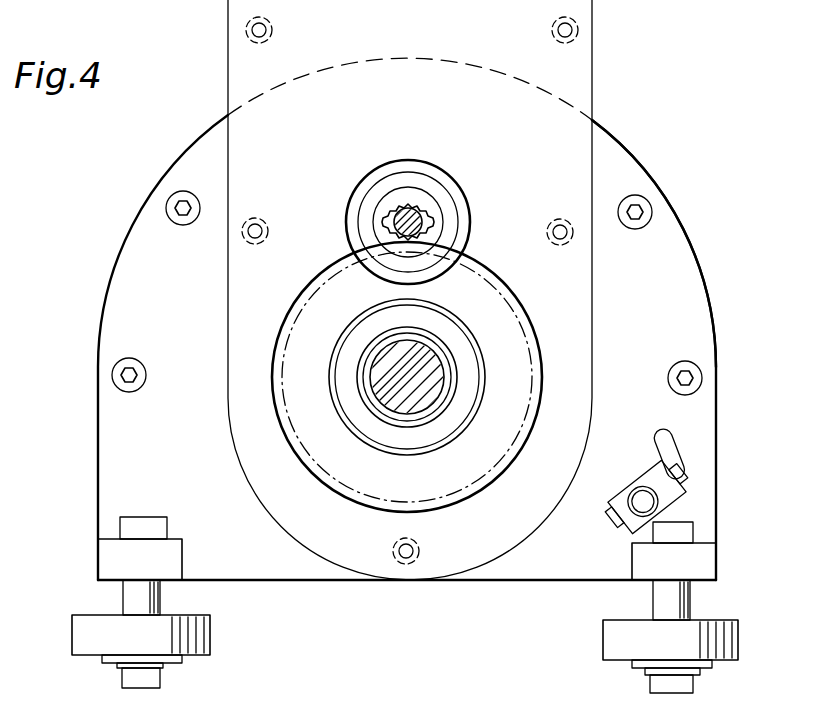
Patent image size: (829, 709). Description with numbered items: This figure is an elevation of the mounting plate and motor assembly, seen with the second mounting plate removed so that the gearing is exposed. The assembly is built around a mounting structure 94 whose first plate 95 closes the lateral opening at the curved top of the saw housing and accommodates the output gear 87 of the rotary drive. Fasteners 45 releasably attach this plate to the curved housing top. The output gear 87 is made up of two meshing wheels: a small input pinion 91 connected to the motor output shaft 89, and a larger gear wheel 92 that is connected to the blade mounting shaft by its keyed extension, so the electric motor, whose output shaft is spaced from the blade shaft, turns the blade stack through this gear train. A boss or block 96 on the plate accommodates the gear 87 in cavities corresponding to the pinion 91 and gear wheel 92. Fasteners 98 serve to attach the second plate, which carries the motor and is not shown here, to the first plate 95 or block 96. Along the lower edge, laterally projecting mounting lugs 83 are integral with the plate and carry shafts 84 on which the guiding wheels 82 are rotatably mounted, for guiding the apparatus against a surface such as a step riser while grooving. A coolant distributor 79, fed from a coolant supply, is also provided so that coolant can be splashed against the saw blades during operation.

The fasteners 45 is at (172, 198).
The coolant distributor 79 is at (665, 505).
The guiding wheels 82 is at (72, 635).
The lugs 83 is at (100, 536).
The shafts 84 is at (122, 590).
The output gear 87 is at (368, 243).
The motor output shaft 89 is at (412, 220).
The pinion 91 is at (438, 221).
The gear wheel 92 is at (455, 240).
The mounting structure 94 is at (719, 372).
The first plate 95 is at (692, 288).
The block 96 is at (593, 72).
The fasteners 98 is at (246, 28).